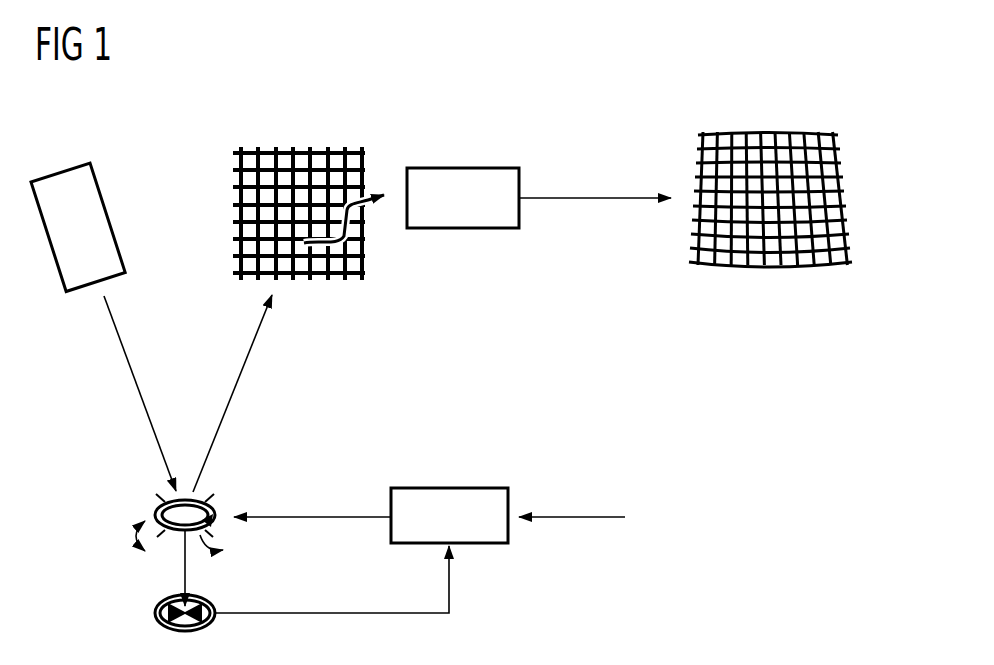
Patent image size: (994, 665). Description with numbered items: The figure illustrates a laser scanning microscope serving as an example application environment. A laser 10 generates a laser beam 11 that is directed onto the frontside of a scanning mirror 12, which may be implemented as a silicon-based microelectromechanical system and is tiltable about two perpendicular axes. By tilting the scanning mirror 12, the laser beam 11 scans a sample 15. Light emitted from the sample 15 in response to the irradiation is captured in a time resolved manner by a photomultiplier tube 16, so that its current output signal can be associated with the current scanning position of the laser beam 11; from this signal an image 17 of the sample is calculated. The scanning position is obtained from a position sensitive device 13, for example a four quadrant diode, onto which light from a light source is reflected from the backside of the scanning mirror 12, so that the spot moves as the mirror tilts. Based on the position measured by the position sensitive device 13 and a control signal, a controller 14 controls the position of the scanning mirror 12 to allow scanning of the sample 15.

The laser 10 is at (62, 172).
The laser beam 11 is at (137, 387).
The scanning mirror 12 is at (183, 497).
The position sensitive device 13 is at (155, 612).
The controller 14 is at (448, 488).
The sample 15 is at (300, 152).
The photomultiplier tube 16 is at (462, 167).
The image 17 is at (765, 133).